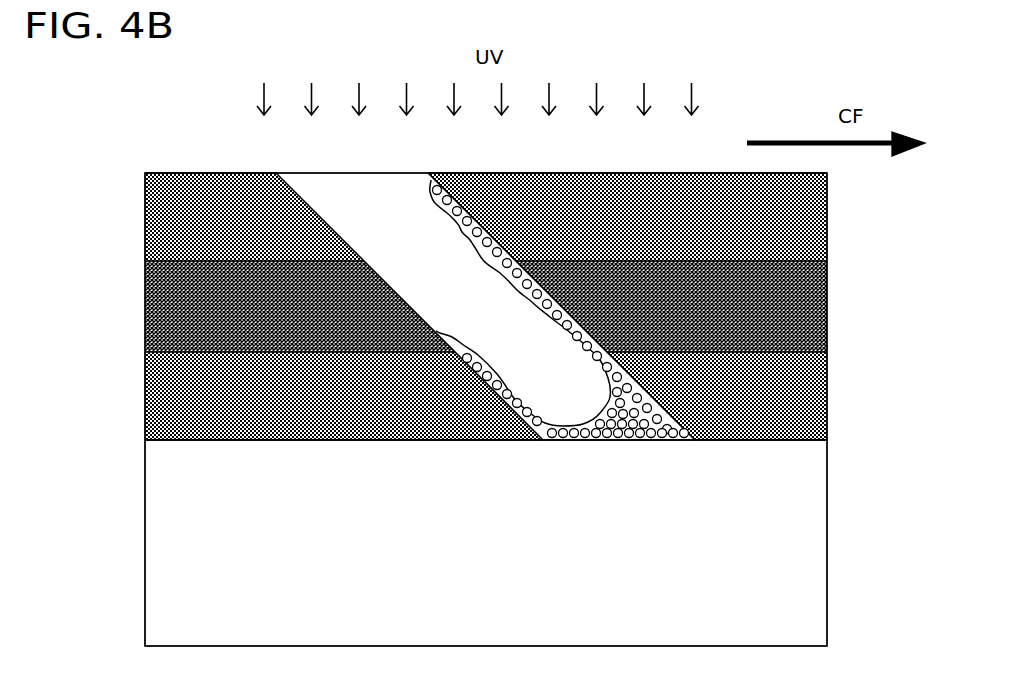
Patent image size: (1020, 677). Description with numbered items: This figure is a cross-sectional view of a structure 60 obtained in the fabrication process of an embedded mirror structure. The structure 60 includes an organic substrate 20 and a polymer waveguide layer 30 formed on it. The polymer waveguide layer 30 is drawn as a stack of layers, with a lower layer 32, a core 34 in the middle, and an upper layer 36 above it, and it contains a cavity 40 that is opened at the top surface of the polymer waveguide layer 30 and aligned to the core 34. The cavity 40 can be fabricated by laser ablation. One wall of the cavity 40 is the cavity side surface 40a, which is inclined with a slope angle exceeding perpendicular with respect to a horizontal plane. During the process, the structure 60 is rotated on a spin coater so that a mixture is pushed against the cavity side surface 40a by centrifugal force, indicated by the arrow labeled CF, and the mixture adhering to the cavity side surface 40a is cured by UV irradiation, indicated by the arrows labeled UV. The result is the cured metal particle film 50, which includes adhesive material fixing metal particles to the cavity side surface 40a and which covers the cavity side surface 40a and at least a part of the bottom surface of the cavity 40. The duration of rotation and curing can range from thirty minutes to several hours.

The organic substrate 20 is at (527, 556).
The polymer waveguide layer 30 is at (845, 173).
The first layer 32 is at (799, 406).
The core 34 is at (799, 305).
The third layer 36 is at (799, 231).
The cavity 40 is at (471, 309).
The cavity side surface 40a is at (488, 234).
The cured metal particle film 50 is at (478, 258).
The structure 60 is at (105, 260).